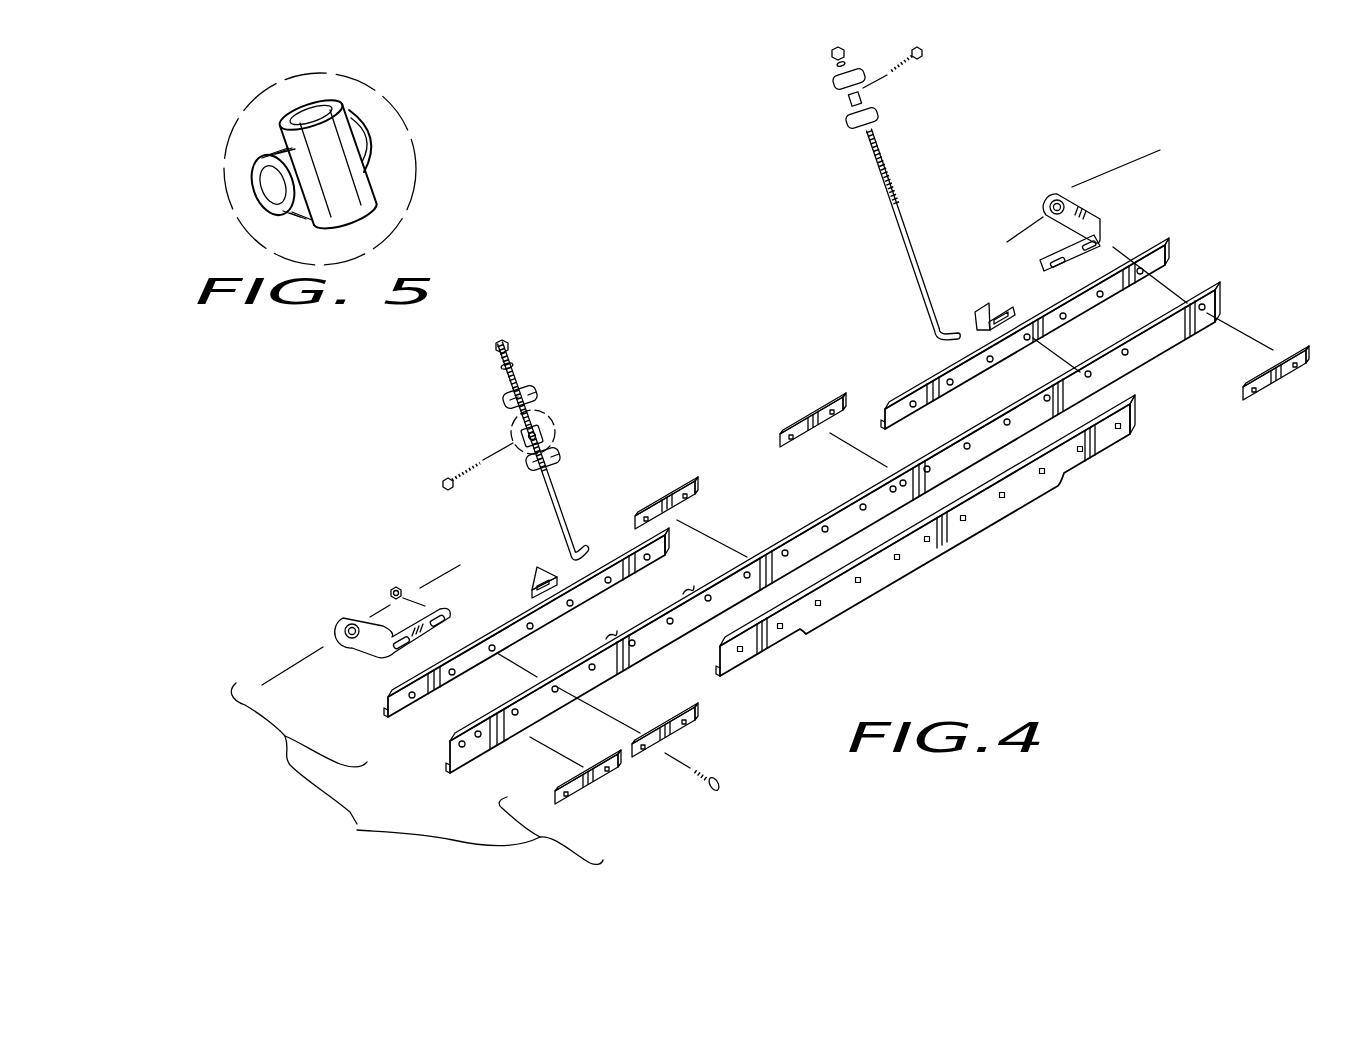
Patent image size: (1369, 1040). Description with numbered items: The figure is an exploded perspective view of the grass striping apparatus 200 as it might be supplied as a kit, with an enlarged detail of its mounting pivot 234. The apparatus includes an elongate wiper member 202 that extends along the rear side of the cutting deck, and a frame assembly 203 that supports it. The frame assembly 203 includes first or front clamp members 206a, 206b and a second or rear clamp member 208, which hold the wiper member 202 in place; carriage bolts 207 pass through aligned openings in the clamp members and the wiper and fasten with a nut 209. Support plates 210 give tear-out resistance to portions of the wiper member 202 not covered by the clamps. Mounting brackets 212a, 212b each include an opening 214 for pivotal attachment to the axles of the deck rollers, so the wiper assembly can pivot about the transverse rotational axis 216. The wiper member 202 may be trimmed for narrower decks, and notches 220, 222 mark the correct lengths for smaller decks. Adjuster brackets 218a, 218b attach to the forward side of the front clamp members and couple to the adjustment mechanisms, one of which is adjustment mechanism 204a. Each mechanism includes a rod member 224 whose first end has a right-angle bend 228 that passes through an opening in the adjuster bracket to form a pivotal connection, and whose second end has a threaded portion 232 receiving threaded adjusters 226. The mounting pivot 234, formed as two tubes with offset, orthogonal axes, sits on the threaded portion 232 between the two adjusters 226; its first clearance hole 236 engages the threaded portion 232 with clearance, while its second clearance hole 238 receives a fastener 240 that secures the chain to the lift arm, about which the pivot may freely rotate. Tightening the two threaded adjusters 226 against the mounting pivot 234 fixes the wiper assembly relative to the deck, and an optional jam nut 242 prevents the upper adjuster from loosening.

In FIG. 4, the grass striping apparatus 200 is at (1010, 602).
In FIG. 4, the elongate wiper member 202 is at (450, 757).
In FIG. 4, the frame assembly 203 is at (417, 773).
In FIG. 4, the adjustment mechanism 204a is at (905, 202).
In FIG. 4, the front clamp member 206a is at (885, 408).
In FIG. 4, the front clamp member 206b is at (438, 692).
In FIG. 4, the carriage bolt 207 is at (722, 786).
In FIG. 4, the rear clamp member 208 is at (858, 603).
In FIG. 4, the nut 209 is at (392, 553).
In FIG. 4, the support plate 210 is at (697, 487).
In FIG. 4, the mounting bracket 212a is at (1050, 192).
In FIG. 4, the mounting bracket 212b is at (350, 615).
In FIG. 4, the opening 214 is at (1045, 208).
In FIG. 4, the transverse rotational axis 216 is at (273, 677).
In FIG. 4, the adjuster bracket 218a is at (1012, 305).
In FIG. 4, the adjuster bracket 218b is at (543, 570).
In FIG. 4, the notch 220 is at (610, 642).
In FIG. 4, the notch 222 is at (690, 597).
In FIG. 4, the rod member 224 is at (915, 258).
In FIG. 4, the threaded adjuster 226 is at (838, 82).
In FIG. 4, the right-angle bend 228 is at (945, 342).
In FIG. 4, the threaded portion 232 is at (880, 152).
In FIG. 5, the mounting pivot 234 is at (362, 190).
In FIG. 4, the mounting pivot 234 is at (848, 100).
In FIG. 5, the first clearance hole 236 is at (311, 114).
In FIG. 5, the second clearance hole 238 is at (266, 205).
In FIG. 4, the fastener 240 is at (922, 54).
In FIG. 4, the jam nut 242 is at (832, 52).